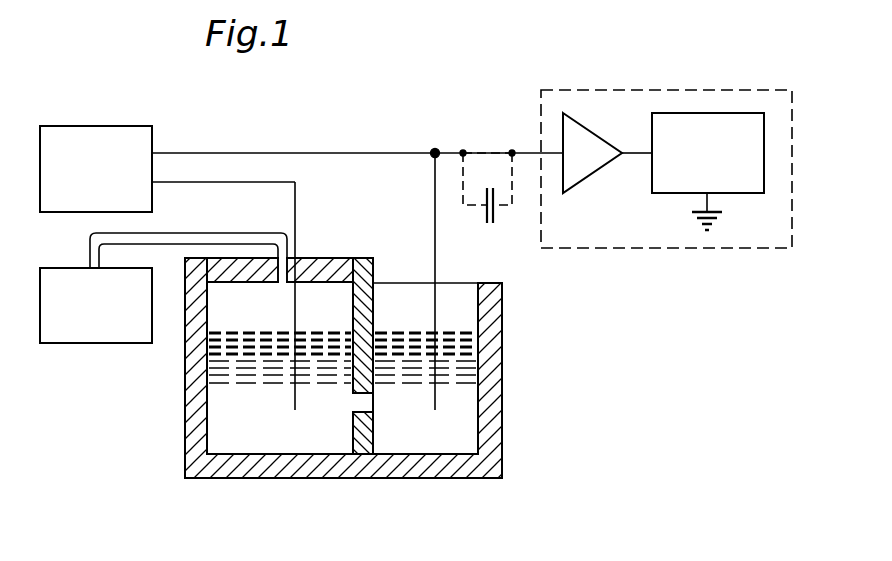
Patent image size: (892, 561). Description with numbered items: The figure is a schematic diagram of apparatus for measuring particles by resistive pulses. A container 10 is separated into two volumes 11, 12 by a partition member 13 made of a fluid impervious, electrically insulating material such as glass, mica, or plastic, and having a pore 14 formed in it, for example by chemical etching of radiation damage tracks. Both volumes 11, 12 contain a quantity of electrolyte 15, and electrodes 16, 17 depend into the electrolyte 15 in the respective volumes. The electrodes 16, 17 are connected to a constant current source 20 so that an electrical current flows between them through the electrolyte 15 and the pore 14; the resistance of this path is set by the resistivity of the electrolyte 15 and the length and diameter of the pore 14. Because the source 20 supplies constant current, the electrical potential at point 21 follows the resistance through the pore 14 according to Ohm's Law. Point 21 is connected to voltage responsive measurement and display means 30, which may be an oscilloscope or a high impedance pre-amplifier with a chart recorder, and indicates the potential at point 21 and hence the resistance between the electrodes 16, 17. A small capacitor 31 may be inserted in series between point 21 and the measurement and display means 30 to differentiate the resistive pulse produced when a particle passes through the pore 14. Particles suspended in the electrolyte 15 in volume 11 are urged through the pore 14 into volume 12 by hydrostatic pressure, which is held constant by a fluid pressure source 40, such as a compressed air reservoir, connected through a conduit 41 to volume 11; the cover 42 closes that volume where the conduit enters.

The container 10 is at (500, 318).
The first volume 11 is at (289, 441).
The second volume 12 is at (420, 443).
The partition member 13 is at (364, 258).
The pore 14 is at (366, 403).
The electrolyte 15 is at (262, 391).
The first electrode 16 is at (295, 314).
The second electrode 17 is at (435, 318).
The constant current source 20 is at (107, 126).
The point 21 is at (431, 151).
The measurement and display means 30 is at (753, 90).
The capacitor 31 is at (493, 218).
The fluid pressure source 40 is at (117, 343).
The conduit 41 is at (237, 234).
The cover 42 is at (333, 261).